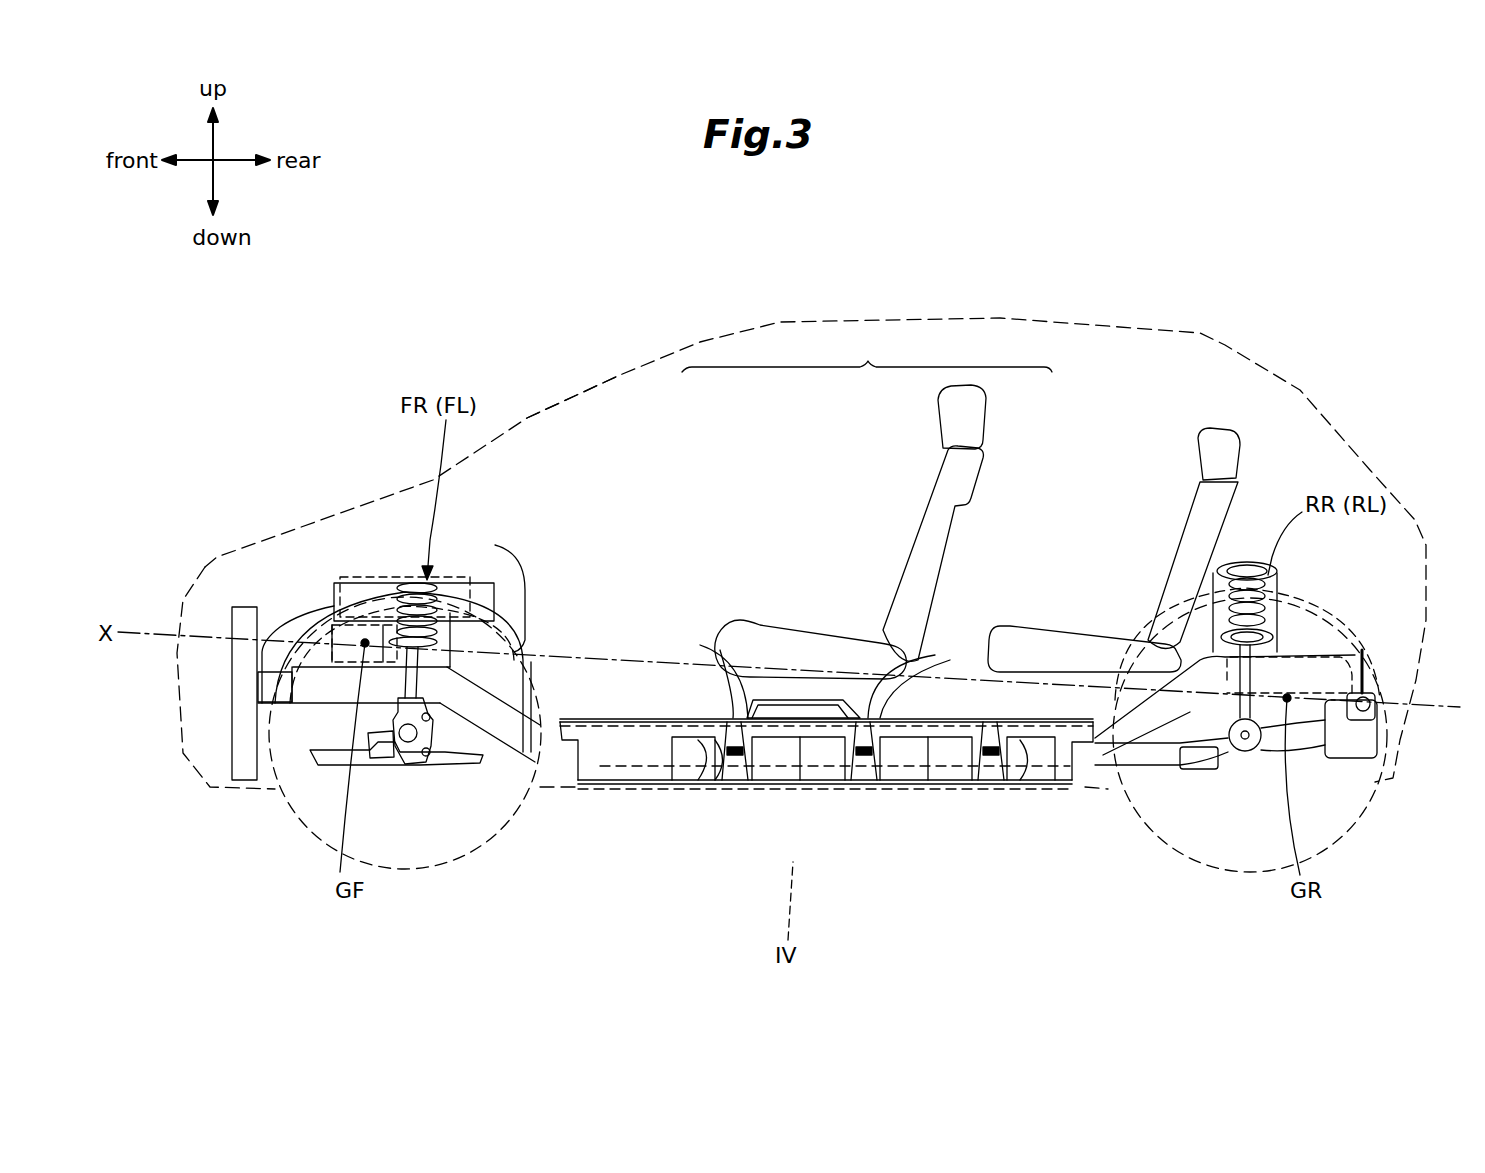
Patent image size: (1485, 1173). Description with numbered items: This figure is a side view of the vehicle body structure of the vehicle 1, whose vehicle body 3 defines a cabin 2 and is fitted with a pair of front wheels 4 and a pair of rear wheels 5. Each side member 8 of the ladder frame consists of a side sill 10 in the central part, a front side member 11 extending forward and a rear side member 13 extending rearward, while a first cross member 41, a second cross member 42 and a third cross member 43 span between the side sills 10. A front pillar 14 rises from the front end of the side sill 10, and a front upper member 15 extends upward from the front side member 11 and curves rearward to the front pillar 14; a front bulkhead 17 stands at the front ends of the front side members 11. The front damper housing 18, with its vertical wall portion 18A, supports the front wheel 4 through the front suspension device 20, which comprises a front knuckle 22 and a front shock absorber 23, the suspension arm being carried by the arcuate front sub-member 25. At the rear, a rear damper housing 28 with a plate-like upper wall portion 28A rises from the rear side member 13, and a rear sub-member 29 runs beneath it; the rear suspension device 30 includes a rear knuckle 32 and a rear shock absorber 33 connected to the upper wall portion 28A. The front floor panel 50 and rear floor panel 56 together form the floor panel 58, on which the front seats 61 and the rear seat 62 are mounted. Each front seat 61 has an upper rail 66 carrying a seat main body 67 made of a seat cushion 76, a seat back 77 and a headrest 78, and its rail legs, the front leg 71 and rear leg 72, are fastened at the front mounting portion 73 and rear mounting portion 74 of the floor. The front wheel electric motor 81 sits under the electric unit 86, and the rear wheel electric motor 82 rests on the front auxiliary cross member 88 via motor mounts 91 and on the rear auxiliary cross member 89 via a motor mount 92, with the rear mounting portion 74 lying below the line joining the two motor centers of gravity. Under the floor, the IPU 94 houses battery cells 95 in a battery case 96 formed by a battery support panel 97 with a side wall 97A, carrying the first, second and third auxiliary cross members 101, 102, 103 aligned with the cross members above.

The vehicle 1 is at (1250, 307).
The cabin 2 is at (832, 476).
The vehicle body 3 is at (522, 420).
The front wheel 4 is at (445, 870).
The rear wheel 5 is at (1183, 855).
The side member 8 is at (650, 787).
The side sill 10 is at (600, 787).
The front side member 11 is at (313, 703).
The rear side member 13 is at (1140, 735).
The front pillar 14 is at (528, 592).
The front upper member 15 is at (292, 622).
The front bulkhead 17 is at (232, 720).
The front damper housing 18 is at (470, 583).
The vertical wall portion 18A is at (438, 560).
The front suspension device 20 is at (442, 580).
The front knuckle 22 is at (393, 748).
The front shock absorber 23 is at (405, 583).
The front sub-member 25 is at (440, 755).
The rear damper housing 28 is at (1280, 608).
The upper wall portion 28A is at (1243, 557).
The rear sub-member 29 is at (1300, 740).
The rear suspension device 30 is at (1259, 553).
The rear knuckle 32 is at (1243, 752).
The rear shock absorber 33 is at (1280, 580).
The first cross member 41 is at (713, 787).
The second cross member 42 is at (890, 787).
The third cross member 43 is at (1020, 787).
The front floor panel 50 is at (605, 720).
The rear floor panel 56 is at (948, 720).
The floor panel 58 is at (867, 350).
The front seat 61 is at (720, 637).
The rear seat 62 is at (1057, 642).
The upper rail 66 is at (742, 700).
The seat main body 67 is at (797, 632).
The front leg 71 is at (737, 707).
The rear leg 72 is at (858, 710).
The front mounting portion 73 is at (713, 715).
The rear mounting portion 74 is at (903, 713).
The seat cushion 76 is at (770, 625).
The seat back 77 is at (935, 537).
The headrest 78 is at (943, 418).
The front wheel electric motor 81 is at (312, 650).
The rear wheel electric motor 82 is at (1333, 612).
The electric unit 86 is at (360, 577).
The front auxiliary cross member 88 is at (1200, 770).
The rear auxiliary cross member 89 is at (1350, 757).
The motor mount 91 is at (1127, 700).
The motor mount 92 is at (1370, 697).
The IPU 94 is at (772, 787).
The battery cell 95 is at (684, 787).
The battery case 96 is at (833, 787).
The battery support panel 97 is at (968, 787).
The side wall 97A is at (562, 787).
The first auxiliary cross member 101 is at (733, 787).
The second auxiliary cross member 102 is at (862, 787).
The third auxiliary cross member 103 is at (988, 787).